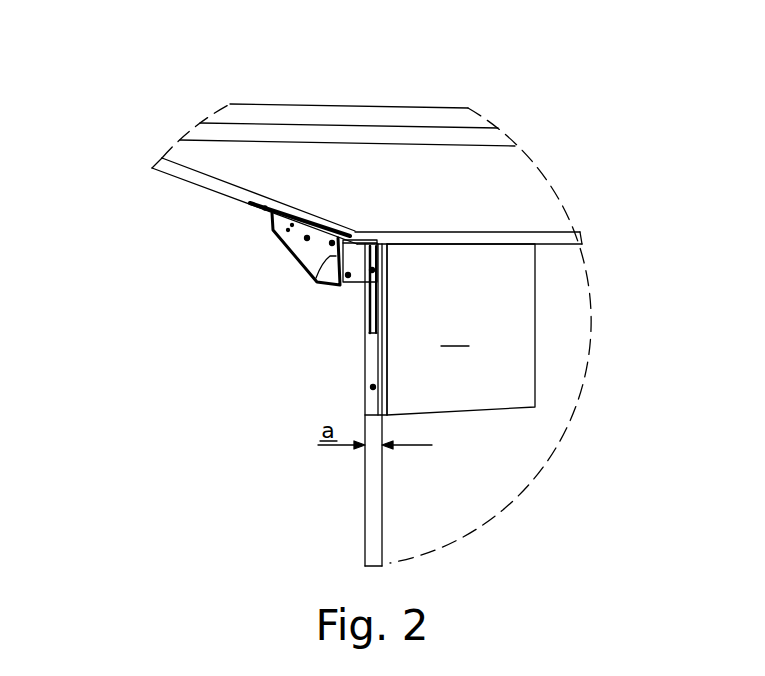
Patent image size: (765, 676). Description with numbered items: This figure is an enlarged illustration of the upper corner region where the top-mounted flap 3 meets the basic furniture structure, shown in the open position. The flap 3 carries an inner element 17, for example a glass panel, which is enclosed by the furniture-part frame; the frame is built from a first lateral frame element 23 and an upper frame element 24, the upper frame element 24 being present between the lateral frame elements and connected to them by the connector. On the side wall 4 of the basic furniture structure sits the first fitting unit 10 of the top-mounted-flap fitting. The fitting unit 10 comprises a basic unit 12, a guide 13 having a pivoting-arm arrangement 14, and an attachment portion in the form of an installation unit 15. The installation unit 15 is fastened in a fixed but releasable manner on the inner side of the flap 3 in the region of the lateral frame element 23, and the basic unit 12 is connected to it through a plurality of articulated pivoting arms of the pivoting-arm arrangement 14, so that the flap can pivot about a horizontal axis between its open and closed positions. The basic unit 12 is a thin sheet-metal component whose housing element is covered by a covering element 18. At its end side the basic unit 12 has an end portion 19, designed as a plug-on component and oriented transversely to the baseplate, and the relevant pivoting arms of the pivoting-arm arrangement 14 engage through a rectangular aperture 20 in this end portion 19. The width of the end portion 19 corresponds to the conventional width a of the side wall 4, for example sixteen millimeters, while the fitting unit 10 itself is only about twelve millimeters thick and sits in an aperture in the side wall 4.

The top-mounted flap 3 is at (441, 100).
The side wall 4 is at (395, 512).
The first fitting unit 10 is at (449, 411).
The basic unit 12 is at (531, 329).
The guide 13 is at (345, 292).
The pivoting-arm arrangement 14 is at (283, 278).
The installation unit 15 is at (279, 200).
The inner element 17 is at (527, 168).
The covering element 18 is at (541, 320).
The end portion 19 is at (373, 363).
The rectangular aperture 20 is at (366, 327).
The first lateral frame element 23 is at (175, 170).
The upper frame element 24 is at (578, 232).